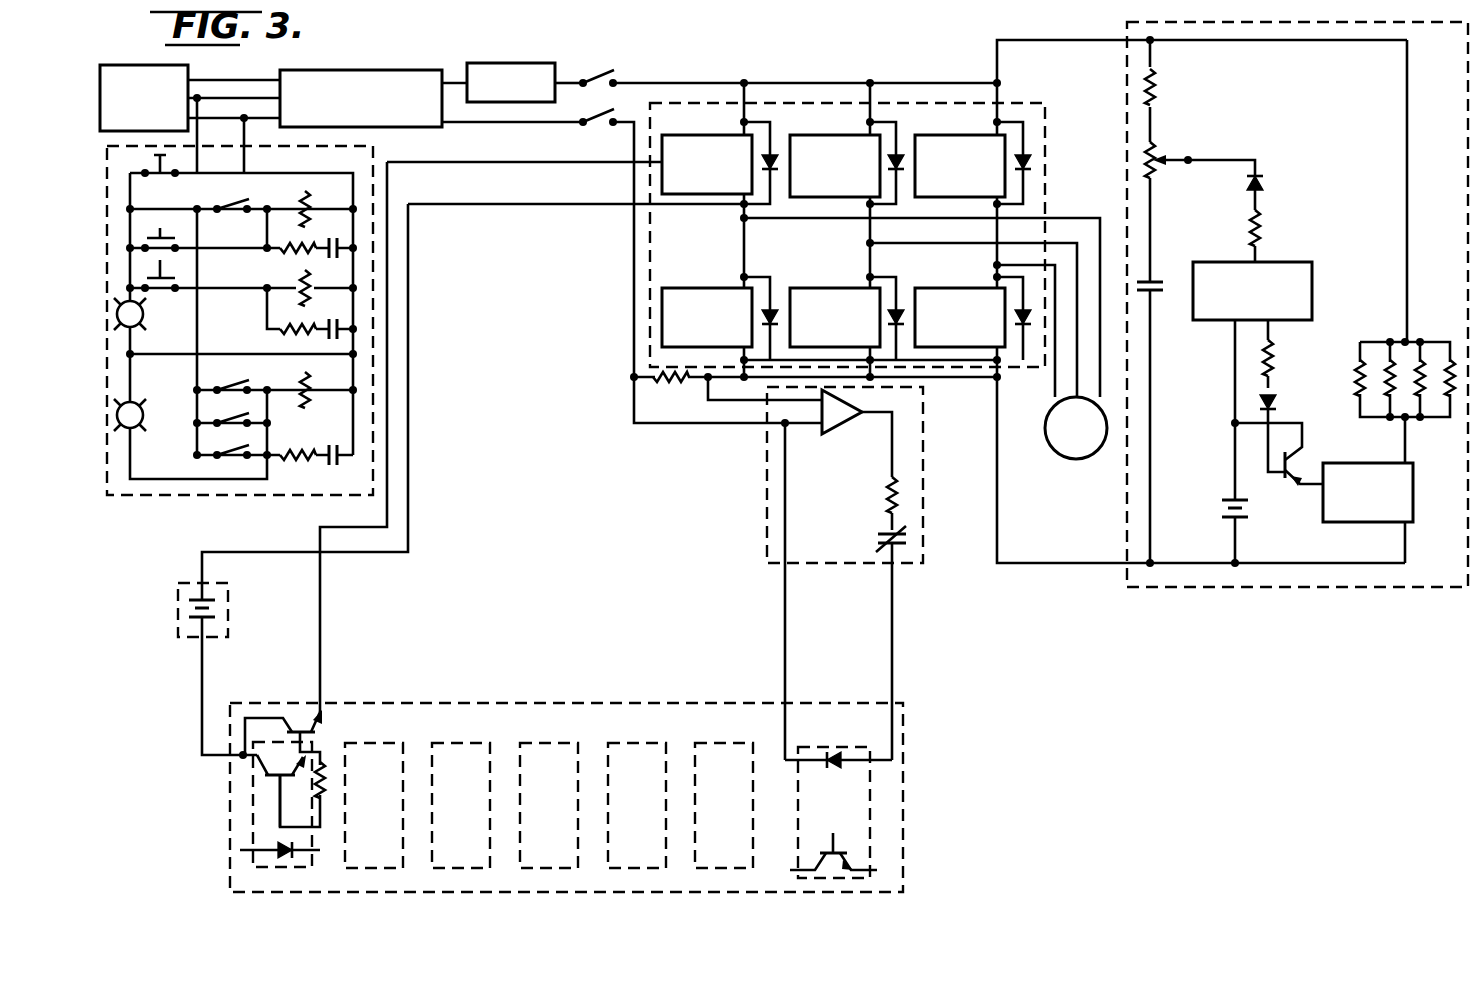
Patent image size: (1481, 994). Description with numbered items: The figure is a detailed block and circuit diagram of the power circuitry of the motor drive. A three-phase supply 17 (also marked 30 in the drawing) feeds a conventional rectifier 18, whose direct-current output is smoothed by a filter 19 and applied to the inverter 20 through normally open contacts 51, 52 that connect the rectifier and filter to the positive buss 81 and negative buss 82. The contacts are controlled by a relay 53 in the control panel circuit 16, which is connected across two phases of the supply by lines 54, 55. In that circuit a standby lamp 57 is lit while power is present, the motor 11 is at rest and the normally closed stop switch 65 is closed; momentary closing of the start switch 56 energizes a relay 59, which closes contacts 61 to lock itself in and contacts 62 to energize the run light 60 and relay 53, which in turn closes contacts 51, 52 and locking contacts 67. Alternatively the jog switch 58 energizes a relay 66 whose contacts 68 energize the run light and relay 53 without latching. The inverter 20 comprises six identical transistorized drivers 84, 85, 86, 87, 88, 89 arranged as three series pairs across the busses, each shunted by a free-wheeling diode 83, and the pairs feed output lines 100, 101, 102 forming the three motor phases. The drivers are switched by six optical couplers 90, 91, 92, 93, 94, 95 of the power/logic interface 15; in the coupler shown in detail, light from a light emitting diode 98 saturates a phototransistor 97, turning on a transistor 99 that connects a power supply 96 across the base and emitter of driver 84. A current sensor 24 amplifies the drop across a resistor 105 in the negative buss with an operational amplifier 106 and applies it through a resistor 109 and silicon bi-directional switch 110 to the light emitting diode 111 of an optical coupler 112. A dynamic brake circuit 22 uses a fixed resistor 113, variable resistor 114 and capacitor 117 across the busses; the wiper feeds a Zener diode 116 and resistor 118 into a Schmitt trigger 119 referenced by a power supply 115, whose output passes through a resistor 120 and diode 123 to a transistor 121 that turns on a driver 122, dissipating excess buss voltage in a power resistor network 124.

The motor 11 is at (1058, 455).
The power/logic interface 15 is at (405, 700).
The control panel circuit 16 is at (208, 497).
The supply 17 is at (141, 64).
The rectifier 18 is at (347, 69).
The filter 19 is at (508, 59).
The inverter 20 is at (832, 88).
The dynamic brake circuit 22 is at (1240, 593).
The current sensor 24 is at (760, 470).
The A.C. supply 30 is at (204, 96).
The normally open contacts 51 is at (602, 68).
The normally open contacts 52 is at (576, 126).
The relay 53 is at (326, 380).
The line 54 is at (200, 142).
The line 55 is at (246, 148).
The start switch 56 is at (200, 226).
The standby lamp 57 is at (143, 325).
The jog switch 58 is at (200, 266).
The relay 59 is at (316, 200).
The run light 60 is at (140, 428).
The normally open contacts 61 is at (253, 202).
The normally open contacts 62 is at (240, 384).
The stop switch 65 is at (156, 167).
The relay 66 is at (310, 280).
The normally open contacts 67 is at (232, 450).
The normally open contacts 68 is at (232, 420).
The positive buss 81 is at (704, 83).
The negative buss 82 is at (648, 270).
The free-wheeling diodes 83 is at (775, 153).
The driver 84 is at (702, 130).
The driver 85 is at (705, 283).
The driver 86 is at (830, 130).
The driver 87 is at (840, 284).
The driver 88 is at (960, 130).
The driver 89 is at (953, 284).
The optical coupler 90 is at (252, 818).
The optical coupler 91 is at (364, 868).
The optical coupler 92 is at (454, 868).
The optical coupler 93 is at (542, 868).
The optical coupler 94 is at (630, 868).
The optical coupler 95 is at (715, 868).
The power supply 96 is at (176, 630).
The phototransistor 97 is at (258, 774).
The light emitting diode 98 is at (288, 868).
The transistor 99 is at (302, 712).
The output line 100 is at (814, 226).
The output line 101 is at (934, 246).
The output line 102 is at (996, 263).
The resistor 105 is at (665, 385).
The operational amplifier 106 is at (834, 434).
The resistor 109 is at (882, 497).
The silicon bi-directional switch 110 is at (876, 542).
The light emitting diode 111 is at (839, 753).
The optical coupler 112 is at (838, 883).
The fixed resistor 113 is at (1160, 84).
The variable resistor 114 is at (1160, 152).
The power supply 115 is at (1220, 519).
The Zener diode 116 is at (1264, 182).
The capacitor 117 is at (1156, 279).
The resistor 118 is at (1265, 227).
The Schmitt trigger 119 is at (1315, 292).
The resistor 120 is at (1274, 357).
The transistor 121 is at (1284, 498).
The driver 122 is at (1364, 524).
The diode 123 is at (1276, 400).
The power resistor network 124 is at (1432, 340).